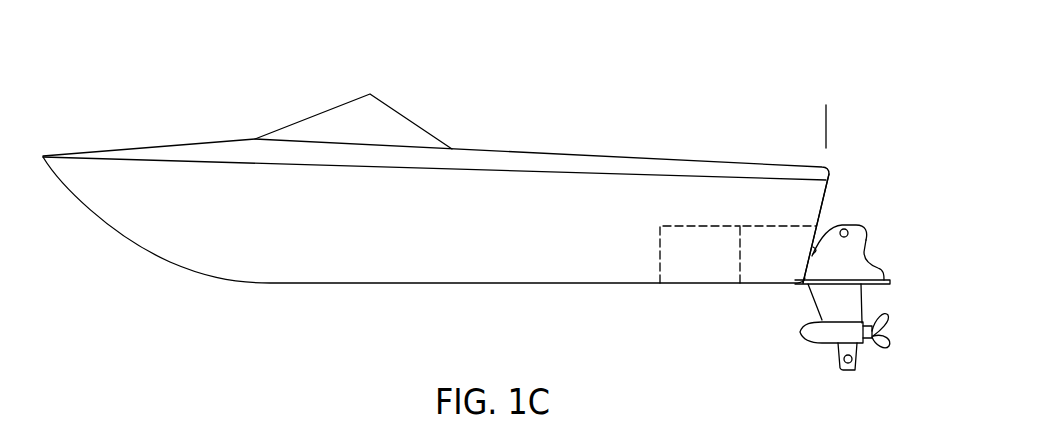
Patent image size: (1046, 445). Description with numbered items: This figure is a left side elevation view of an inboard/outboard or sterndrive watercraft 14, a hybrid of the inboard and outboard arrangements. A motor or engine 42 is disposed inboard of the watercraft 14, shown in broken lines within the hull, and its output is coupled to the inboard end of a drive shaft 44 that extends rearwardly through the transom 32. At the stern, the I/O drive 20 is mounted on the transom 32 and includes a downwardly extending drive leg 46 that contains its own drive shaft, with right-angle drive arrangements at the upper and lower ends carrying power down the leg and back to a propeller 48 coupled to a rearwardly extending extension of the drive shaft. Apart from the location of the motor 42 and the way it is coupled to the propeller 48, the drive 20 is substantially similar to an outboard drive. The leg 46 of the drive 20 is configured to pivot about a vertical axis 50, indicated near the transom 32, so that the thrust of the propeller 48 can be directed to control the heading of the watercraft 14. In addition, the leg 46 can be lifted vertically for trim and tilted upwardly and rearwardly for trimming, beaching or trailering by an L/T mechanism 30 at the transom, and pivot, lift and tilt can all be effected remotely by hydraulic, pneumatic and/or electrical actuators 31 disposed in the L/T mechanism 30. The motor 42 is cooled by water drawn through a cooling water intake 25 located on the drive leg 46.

The I/O or sterndrive watercraft 14 is at (150, 140).
The I/O drive 20 is at (842, 301).
The cooling water intake 25 is at (835, 362).
The L/T mechanism 30 is at (815, 256).
The actuators 31 is at (844, 236).
The transom 32 is at (825, 194).
The motor or engine 42 is at (680, 225).
The drive shaft 44 is at (768, 225).
The drive leg 46 is at (828, 292).
The propeller 48 is at (888, 345).
The vertical axis 50 is at (826, 118).